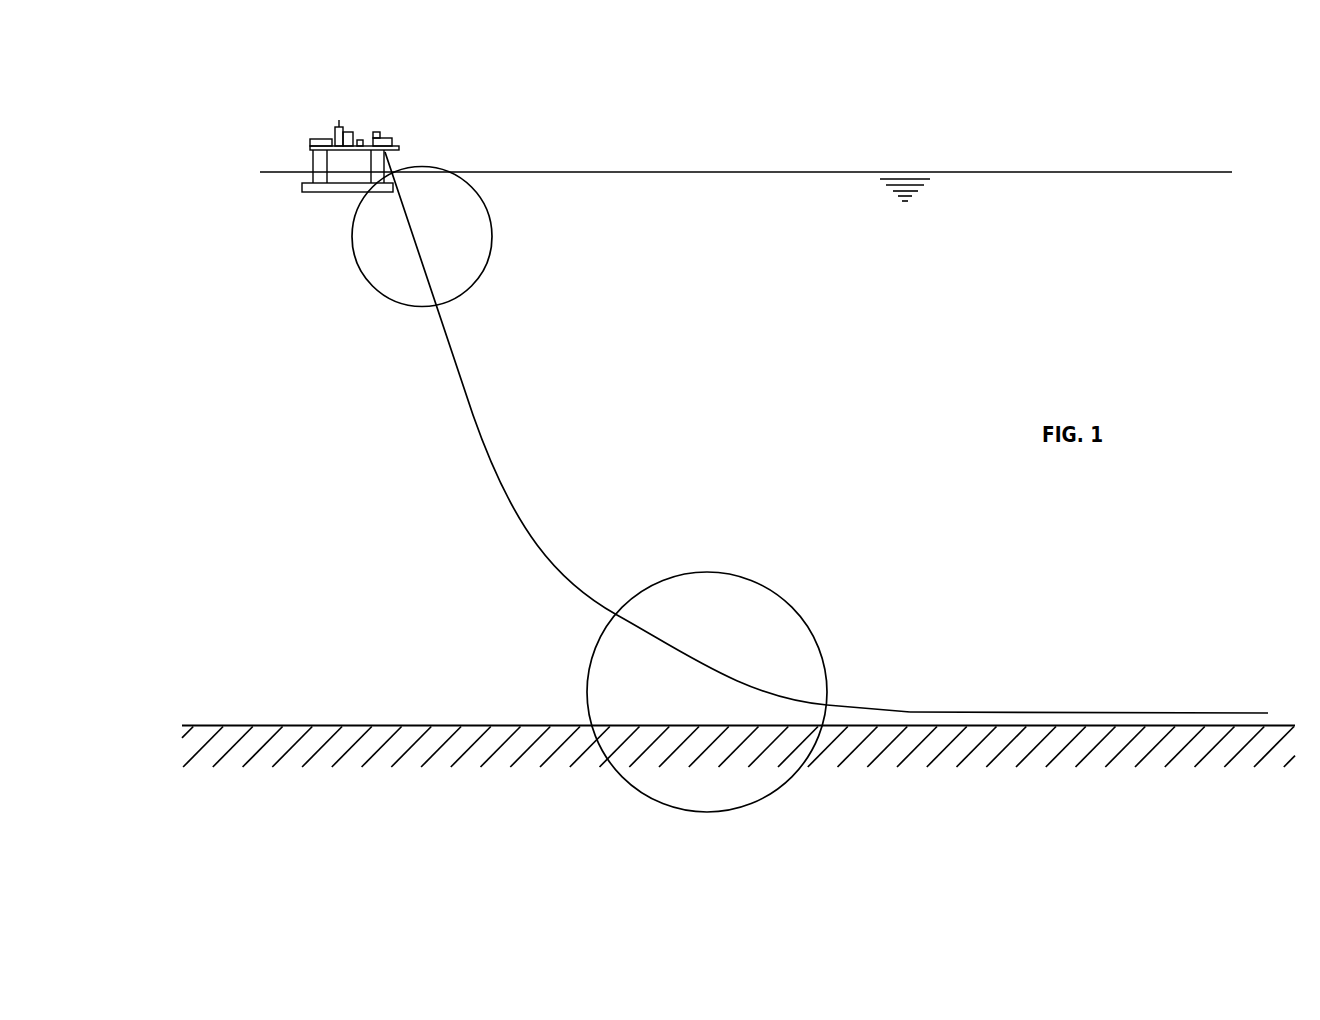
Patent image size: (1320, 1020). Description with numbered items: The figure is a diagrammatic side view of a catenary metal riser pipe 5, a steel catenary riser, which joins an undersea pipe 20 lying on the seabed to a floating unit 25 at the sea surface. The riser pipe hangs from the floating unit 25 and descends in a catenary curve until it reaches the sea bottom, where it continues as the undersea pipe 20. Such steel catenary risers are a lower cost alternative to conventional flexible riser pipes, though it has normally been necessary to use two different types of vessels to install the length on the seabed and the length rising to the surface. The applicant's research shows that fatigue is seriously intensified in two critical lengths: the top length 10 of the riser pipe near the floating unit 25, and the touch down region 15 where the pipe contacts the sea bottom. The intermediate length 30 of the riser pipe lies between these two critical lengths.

The catenary metal riser pipe 5 is at (185, 503).
The top length of the riser pipe 10 is at (417, 250).
The touch down region 15 is at (722, 672).
The undersea pipe 20 is at (1227, 713).
The floating unit 25 is at (387, 138).
The intermediate length 30 is at (473, 415).